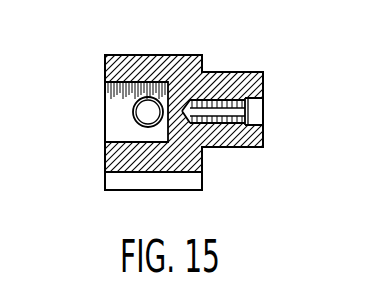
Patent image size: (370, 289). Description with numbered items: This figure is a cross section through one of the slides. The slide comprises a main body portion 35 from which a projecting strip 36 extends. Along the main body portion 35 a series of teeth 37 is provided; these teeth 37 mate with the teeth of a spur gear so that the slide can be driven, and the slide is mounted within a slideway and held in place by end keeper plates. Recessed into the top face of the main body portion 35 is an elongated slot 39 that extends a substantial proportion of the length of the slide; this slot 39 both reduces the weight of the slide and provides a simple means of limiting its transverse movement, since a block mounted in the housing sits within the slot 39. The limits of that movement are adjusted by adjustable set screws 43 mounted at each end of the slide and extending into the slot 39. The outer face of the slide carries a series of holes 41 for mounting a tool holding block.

The main body portion 35 is at (105, 68).
The projecting strip 36 is at (243, 80).
The teeth 37 is at (190, 179).
The elongated slot 39 is at (114, 129).
The holes 41 is at (245, 114).
The adjustable set screws 43 is at (133, 112).